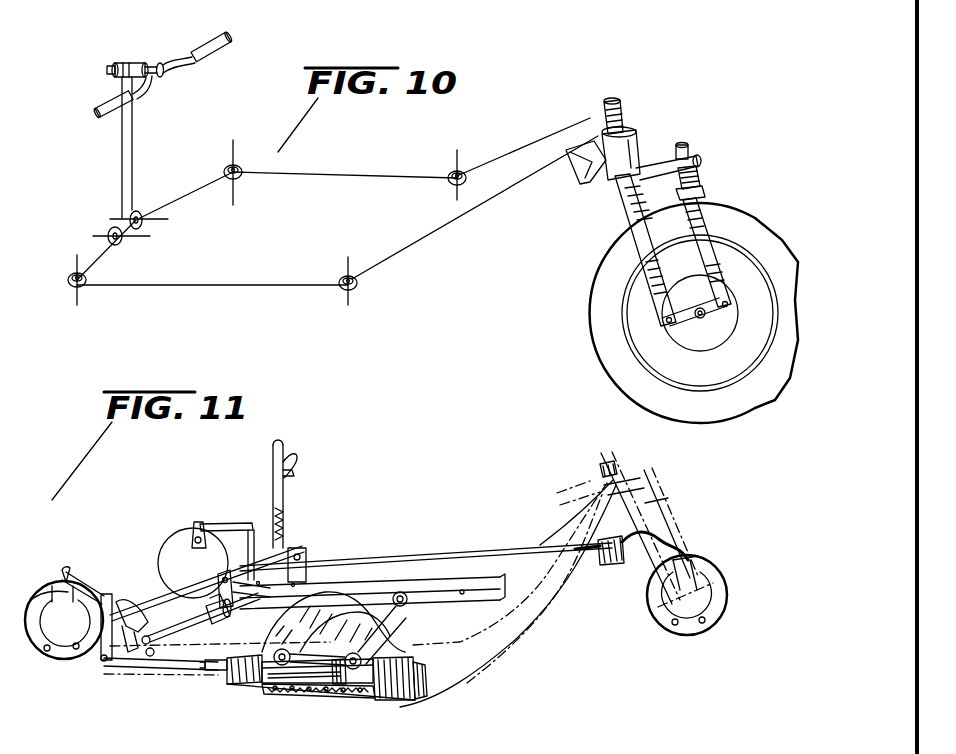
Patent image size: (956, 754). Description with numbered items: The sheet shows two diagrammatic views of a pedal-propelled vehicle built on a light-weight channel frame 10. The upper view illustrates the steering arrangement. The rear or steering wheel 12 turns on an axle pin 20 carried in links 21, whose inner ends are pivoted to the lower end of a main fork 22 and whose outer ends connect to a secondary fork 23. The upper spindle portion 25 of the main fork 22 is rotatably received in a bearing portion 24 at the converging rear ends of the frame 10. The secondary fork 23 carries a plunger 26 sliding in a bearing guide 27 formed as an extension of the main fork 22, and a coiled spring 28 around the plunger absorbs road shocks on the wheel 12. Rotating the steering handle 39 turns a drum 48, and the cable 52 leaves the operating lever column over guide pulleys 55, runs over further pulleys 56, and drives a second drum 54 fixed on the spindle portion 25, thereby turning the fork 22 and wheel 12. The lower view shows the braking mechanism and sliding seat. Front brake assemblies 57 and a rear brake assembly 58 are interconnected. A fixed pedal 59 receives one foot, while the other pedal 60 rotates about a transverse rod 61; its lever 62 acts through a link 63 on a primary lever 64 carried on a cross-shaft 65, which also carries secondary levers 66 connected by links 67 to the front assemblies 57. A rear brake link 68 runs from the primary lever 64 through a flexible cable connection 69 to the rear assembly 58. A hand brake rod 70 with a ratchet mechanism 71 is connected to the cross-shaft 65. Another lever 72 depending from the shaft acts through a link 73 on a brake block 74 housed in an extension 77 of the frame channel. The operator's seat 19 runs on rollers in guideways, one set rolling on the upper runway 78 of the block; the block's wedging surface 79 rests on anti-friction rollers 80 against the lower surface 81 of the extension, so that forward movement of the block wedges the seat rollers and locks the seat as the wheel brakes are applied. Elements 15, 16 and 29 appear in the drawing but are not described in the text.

In FIG. 10, the frame 10 is at (566, 150).
In FIG. 11, the frame 10 is at (170, 676).
In FIG. 10, the rear wheel 12 is at (748, 236).
In FIG. 11, the roller 15 is at (378, 658).
In FIG. 11, the frame rail 16 is at (428, 588).
In FIG. 11, the sliding seat 19 is at (398, 640).
In FIG. 10, the axle pin 20 is at (695, 304).
In FIG. 10, the links 21 is at (714, 316).
In FIG. 10, the main fork 22 is at (648, 240).
In FIG. 10, the secondary fork 23 is at (716, 222).
In FIG. 10, the bearing portion 24 is at (590, 175).
In FIG. 10, the upper spindle portion 25 is at (640, 146).
In FIG. 10, the plunger 26 is at (688, 150).
In FIG. 10, the bearing guide 27 is at (700, 162).
In FIG. 10, the coiled spring 28 is at (700, 182).
In FIG. 11, the pivot pin 29 is at (476, 586).
In FIG. 10, the steering handle 39 is at (220, 60).
In FIG. 10, the drum 48 is at (117, 80).
In FIG. 10, the cable 52 is at (318, 170).
In FIG. 10, the second drum 54 is at (620, 112).
In FIG. 10, the guide pulleys 55 is at (140, 206).
In FIG. 10, the pulleys 56 is at (240, 178).
In FIG. 11, the front brake assemblies 57 is at (42, 612).
In FIG. 11, the rear brake assembly 58 is at (720, 598).
In FIG. 11, the pedal 59 is at (132, 632).
In FIG. 11, the pedal 60 is at (200, 622).
In FIG. 11, the rod 61 is at (164, 628).
In FIG. 11, the lever 62 is at (192, 546).
In FIG. 11, the link 63 is at (242, 522).
In FIG. 11, the primary lever 64 is at (300, 552).
In FIG. 11, the cross-shaft 65 is at (152, 590).
In FIG. 11, the secondary levers 66 is at (112, 600).
In FIG. 11, the links 67 is at (90, 586).
In FIG. 11, the rear brake link 68 is at (418, 552).
In FIG. 11, the flexible cable connection 69 is at (660, 540).
In FIG. 11, the hand brake rod 70 is at (284, 482).
In FIG. 11, the ratchet mechanism 71 is at (286, 500).
In FIG. 11, the lever 72 is at (102, 658).
In FIG. 11, the link 73 is at (142, 662).
In FIG. 11, the brake block 74 is at (296, 692).
In FIG. 11, the extension 77 is at (262, 678).
In FIG. 11, the upper runway 78 is at (298, 658).
In FIG. 11, the wedging surface 79 is at (332, 696).
In FIG. 11, the anti-friction rollers 80 is at (338, 692).
In FIG. 11, the lower surface 81 is at (286, 680).